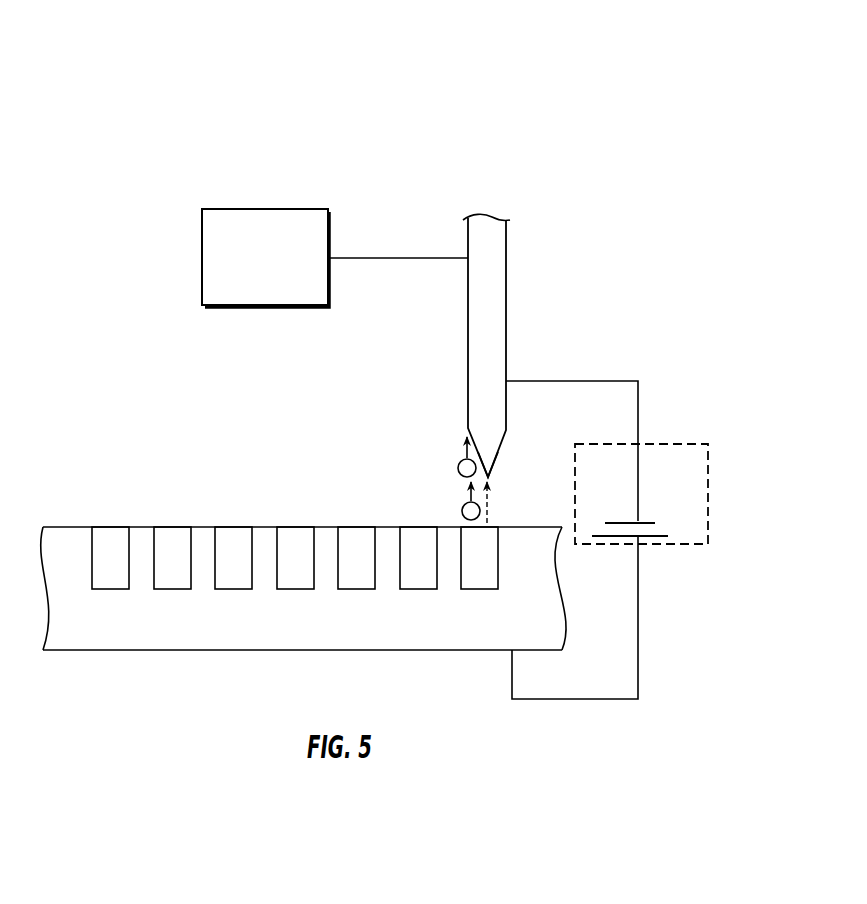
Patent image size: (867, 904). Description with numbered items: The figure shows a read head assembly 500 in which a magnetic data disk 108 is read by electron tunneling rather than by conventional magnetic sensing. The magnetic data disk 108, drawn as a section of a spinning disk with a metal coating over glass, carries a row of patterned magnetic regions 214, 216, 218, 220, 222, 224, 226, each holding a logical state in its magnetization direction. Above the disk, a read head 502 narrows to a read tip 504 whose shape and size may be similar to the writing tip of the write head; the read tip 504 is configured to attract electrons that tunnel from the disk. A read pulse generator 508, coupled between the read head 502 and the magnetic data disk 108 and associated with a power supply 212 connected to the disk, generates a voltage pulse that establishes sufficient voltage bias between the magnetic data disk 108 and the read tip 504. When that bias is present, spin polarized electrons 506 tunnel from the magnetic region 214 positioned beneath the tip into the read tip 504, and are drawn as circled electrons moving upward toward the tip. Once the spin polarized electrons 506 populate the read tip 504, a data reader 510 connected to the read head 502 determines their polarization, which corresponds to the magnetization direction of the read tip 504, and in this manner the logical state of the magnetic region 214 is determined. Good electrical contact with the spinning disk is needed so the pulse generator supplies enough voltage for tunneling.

The read head assembly 500 is at (193, 76).
The data reader 510 is at (202, 257).
The read head 502 is at (507, 262).
The read tip 504 is at (493, 458).
The spin polarized electrons 506 is at (449, 498).
The read pulse generator 508 is at (650, 545).
The power supply 212 is at (673, 523).
The magnetic data disk 108 is at (202, 459).
The magnetic region 214 is at (478, 589).
The magnetic region 216 is at (417, 589).
The magnetic region 218 is at (355, 589).
The magnetic region 220 is at (294, 589).
The magnetic region 222 is at (232, 589).
The magnetic region 224 is at (171, 589).
The magnetic region 226 is at (109, 589).